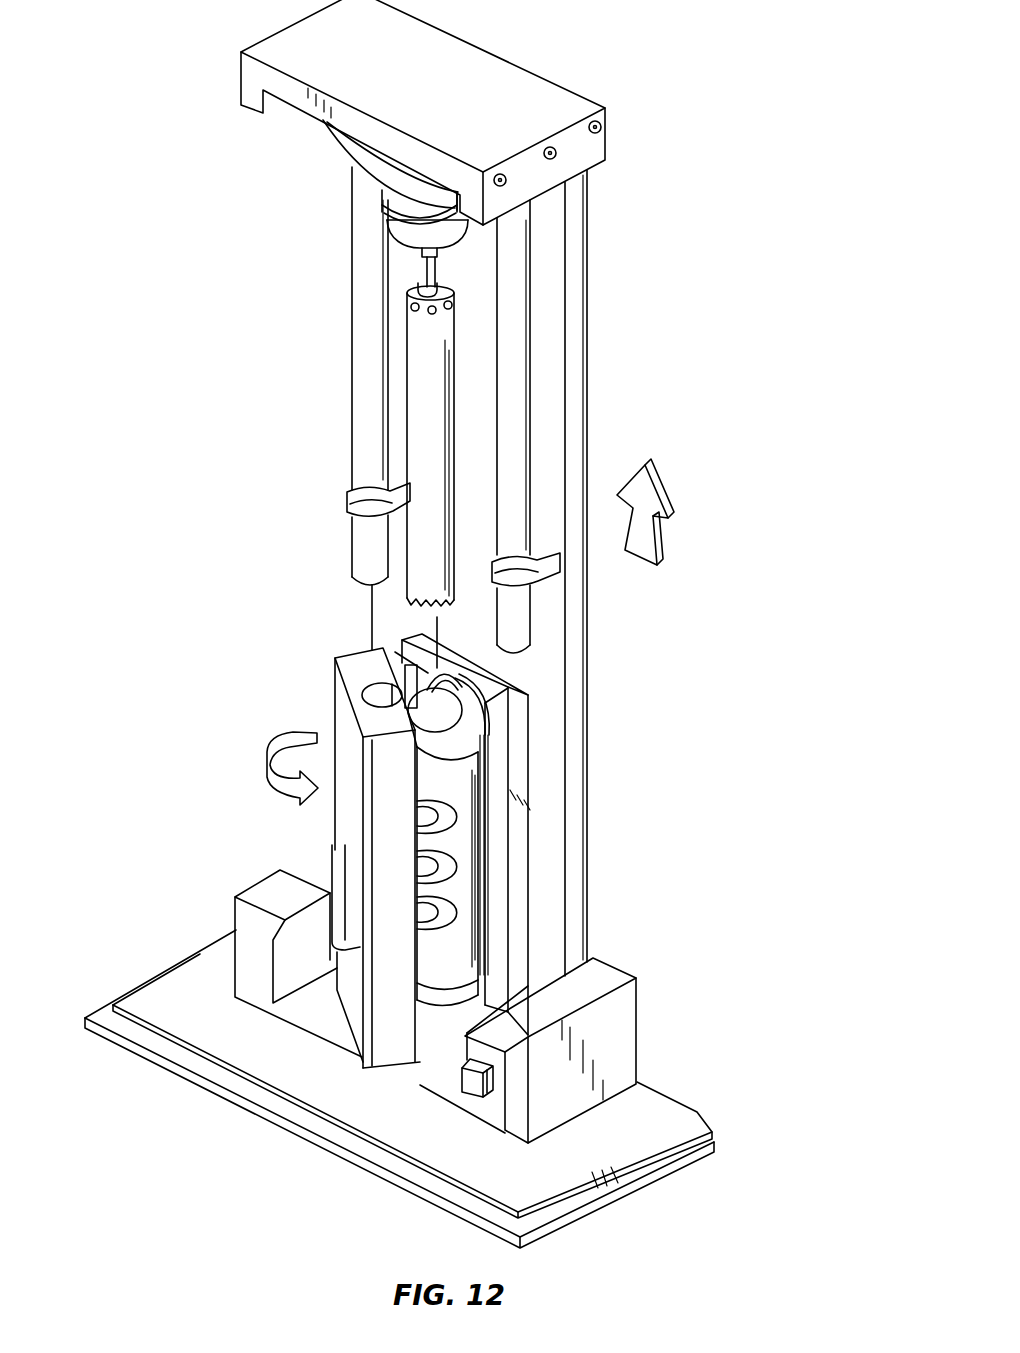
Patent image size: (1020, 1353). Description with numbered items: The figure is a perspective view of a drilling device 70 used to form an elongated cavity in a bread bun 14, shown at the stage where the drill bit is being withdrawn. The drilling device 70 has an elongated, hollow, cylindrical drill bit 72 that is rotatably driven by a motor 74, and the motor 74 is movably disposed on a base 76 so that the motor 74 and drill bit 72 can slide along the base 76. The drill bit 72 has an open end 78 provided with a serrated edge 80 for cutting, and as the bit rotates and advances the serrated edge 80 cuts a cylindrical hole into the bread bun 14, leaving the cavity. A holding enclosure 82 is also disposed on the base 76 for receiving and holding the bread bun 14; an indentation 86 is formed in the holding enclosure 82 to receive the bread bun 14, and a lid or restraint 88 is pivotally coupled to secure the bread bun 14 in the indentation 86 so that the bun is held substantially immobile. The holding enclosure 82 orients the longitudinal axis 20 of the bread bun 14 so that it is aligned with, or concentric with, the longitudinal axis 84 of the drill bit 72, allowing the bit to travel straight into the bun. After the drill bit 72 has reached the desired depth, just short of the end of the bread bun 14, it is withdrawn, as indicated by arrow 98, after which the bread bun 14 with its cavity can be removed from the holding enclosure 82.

The bread bun 14 is at (455, 947).
The longitudinal axis 20 is at (472, 690).
The drilling device 70 is at (612, 264).
The drill bit 72 is at (430, 378).
The motor 74 is at (400, 200).
The base 76 is at (580, 412).
The open end 78 is at (430, 546).
The serrated edge 80 is at (410, 604).
The holding enclosure 82 is at (523, 833).
The longitudinal axis 84 is at (437, 640).
The indentation 86 is at (486, 725).
The lid or restraint 88 is at (345, 822).
The arrow 98 is at (650, 496).